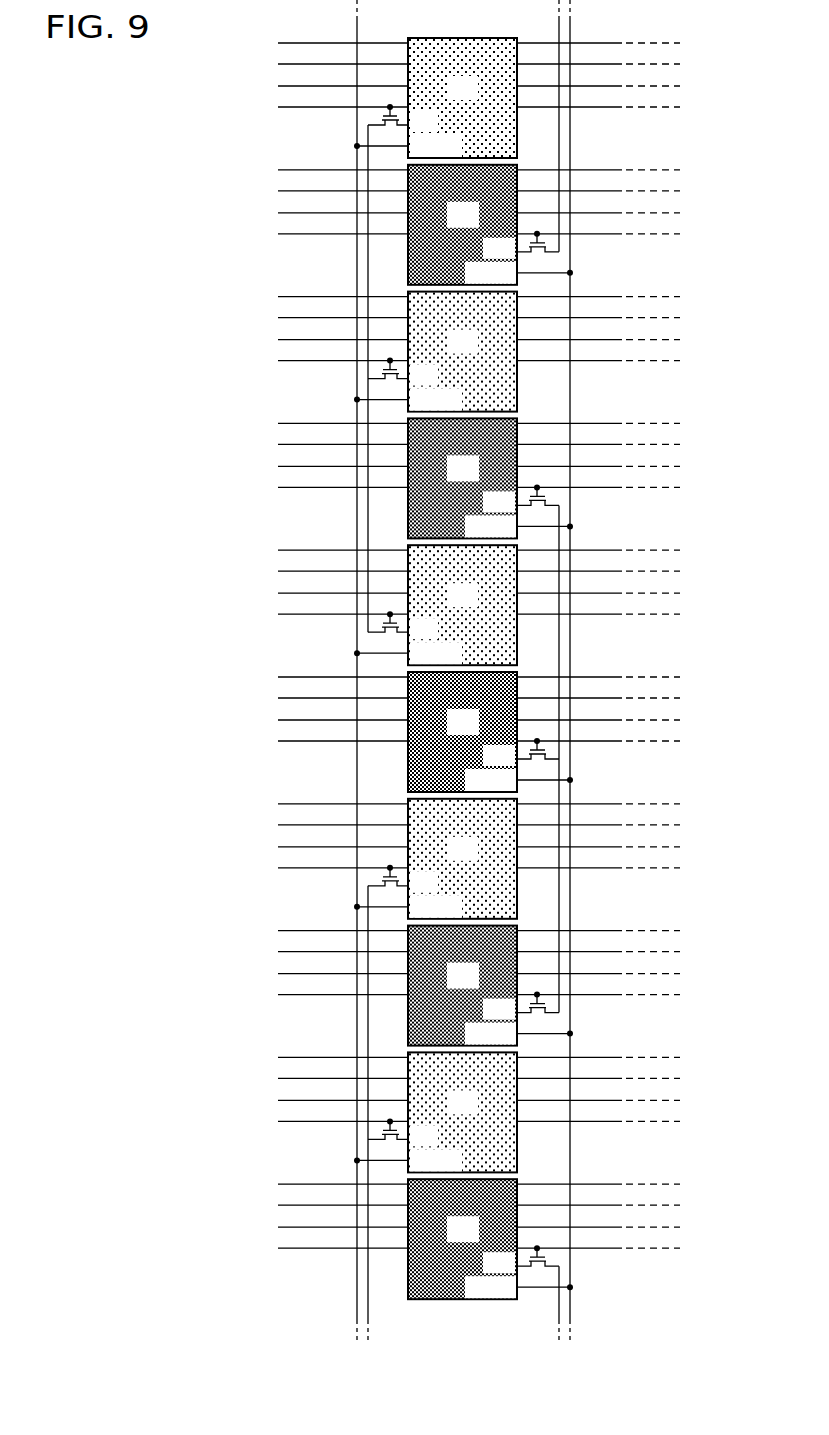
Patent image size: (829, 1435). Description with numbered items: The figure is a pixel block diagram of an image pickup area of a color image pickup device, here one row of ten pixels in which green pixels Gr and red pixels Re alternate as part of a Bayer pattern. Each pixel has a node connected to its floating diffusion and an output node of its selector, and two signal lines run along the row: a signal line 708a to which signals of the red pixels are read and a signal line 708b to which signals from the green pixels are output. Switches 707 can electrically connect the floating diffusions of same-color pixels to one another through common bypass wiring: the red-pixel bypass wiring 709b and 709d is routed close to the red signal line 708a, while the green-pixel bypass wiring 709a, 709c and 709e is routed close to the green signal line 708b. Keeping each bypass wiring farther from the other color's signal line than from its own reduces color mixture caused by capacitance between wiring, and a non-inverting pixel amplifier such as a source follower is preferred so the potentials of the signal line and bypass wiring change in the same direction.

The switch 707 is at (425, 665).
The signal line 708a is at (357, 770).
The signal line 708b is at (570, 657).
The bypass wiring 709a is at (559, 130).
The common bypass wiring 709b is at (368, 268).
The common bypass wiring 709c is at (559, 630).
The bypass wiring 709d is at (368, 1030).
The bypass wiring 709e is at (559, 1300).